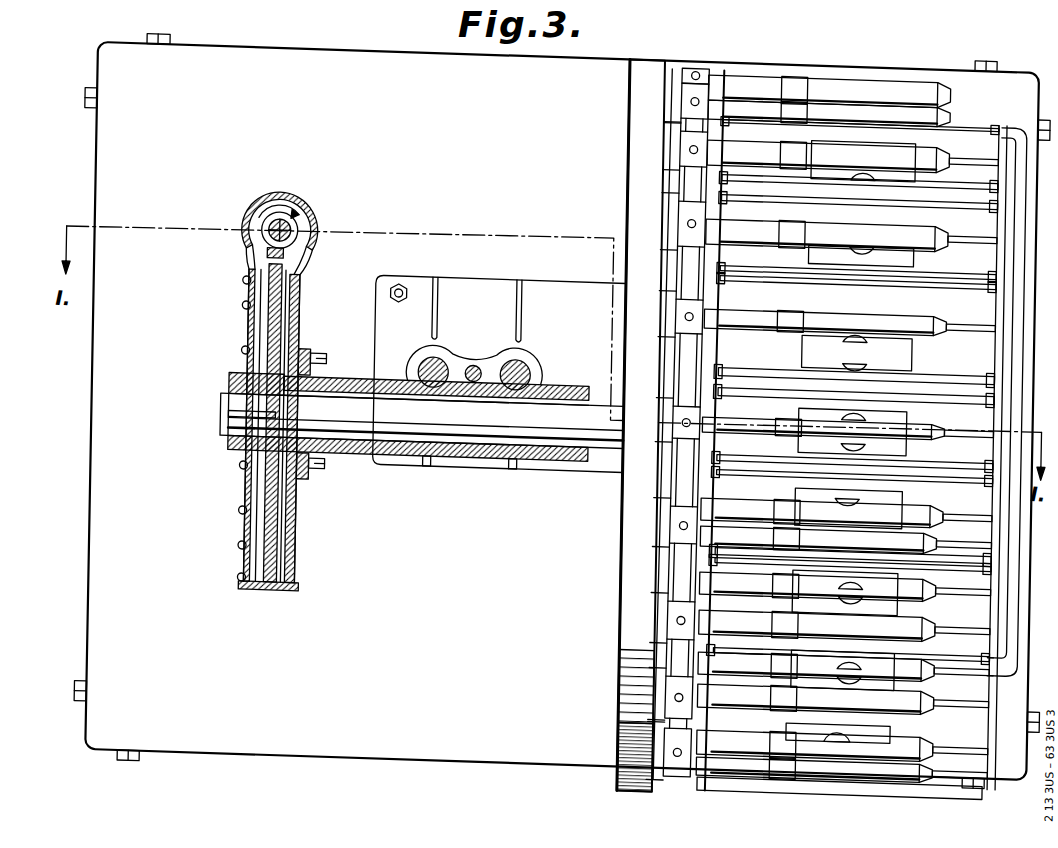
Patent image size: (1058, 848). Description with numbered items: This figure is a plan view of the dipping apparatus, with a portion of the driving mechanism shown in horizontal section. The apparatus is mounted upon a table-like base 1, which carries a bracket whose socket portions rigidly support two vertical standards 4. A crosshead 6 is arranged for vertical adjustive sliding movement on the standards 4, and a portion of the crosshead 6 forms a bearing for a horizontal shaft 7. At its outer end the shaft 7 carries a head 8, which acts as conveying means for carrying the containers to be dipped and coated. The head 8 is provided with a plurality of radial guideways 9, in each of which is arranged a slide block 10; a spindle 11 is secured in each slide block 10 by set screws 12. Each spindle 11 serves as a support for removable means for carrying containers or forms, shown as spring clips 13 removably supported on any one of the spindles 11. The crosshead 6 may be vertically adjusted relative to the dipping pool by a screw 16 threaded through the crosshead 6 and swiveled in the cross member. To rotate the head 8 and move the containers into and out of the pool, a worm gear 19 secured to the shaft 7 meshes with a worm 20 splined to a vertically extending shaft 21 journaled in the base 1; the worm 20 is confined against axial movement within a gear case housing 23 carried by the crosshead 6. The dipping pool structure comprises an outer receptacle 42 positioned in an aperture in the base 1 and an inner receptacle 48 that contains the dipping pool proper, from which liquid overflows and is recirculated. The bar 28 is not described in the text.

The base 1 is at (116, 126).
The vertical standards 4 is at (430, 352).
The crosshead 6 is at (474, 445).
The horizontal shaft 7 is at (371, 405).
The head 8 is at (670, 545).
The radial guideways 9 is at (681, 412).
The slide block 10 is at (680, 510).
The spindle 11 is at (968, 466).
The set screws 12 is at (695, 204).
The spring clips 13 is at (845, 630).
The screw 16 is at (483, 352).
The worm gear 19 is at (272, 250).
The worm 20 is at (270, 216).
The vertically extending shaft 21 is at (292, 220).
The gear case housing 23 is at (257, 322).
The mounting bar 28 is at (630, 600).
The outer receptacle 42 is at (1019, 650).
The inner receptacle 48 is at (1012, 103).